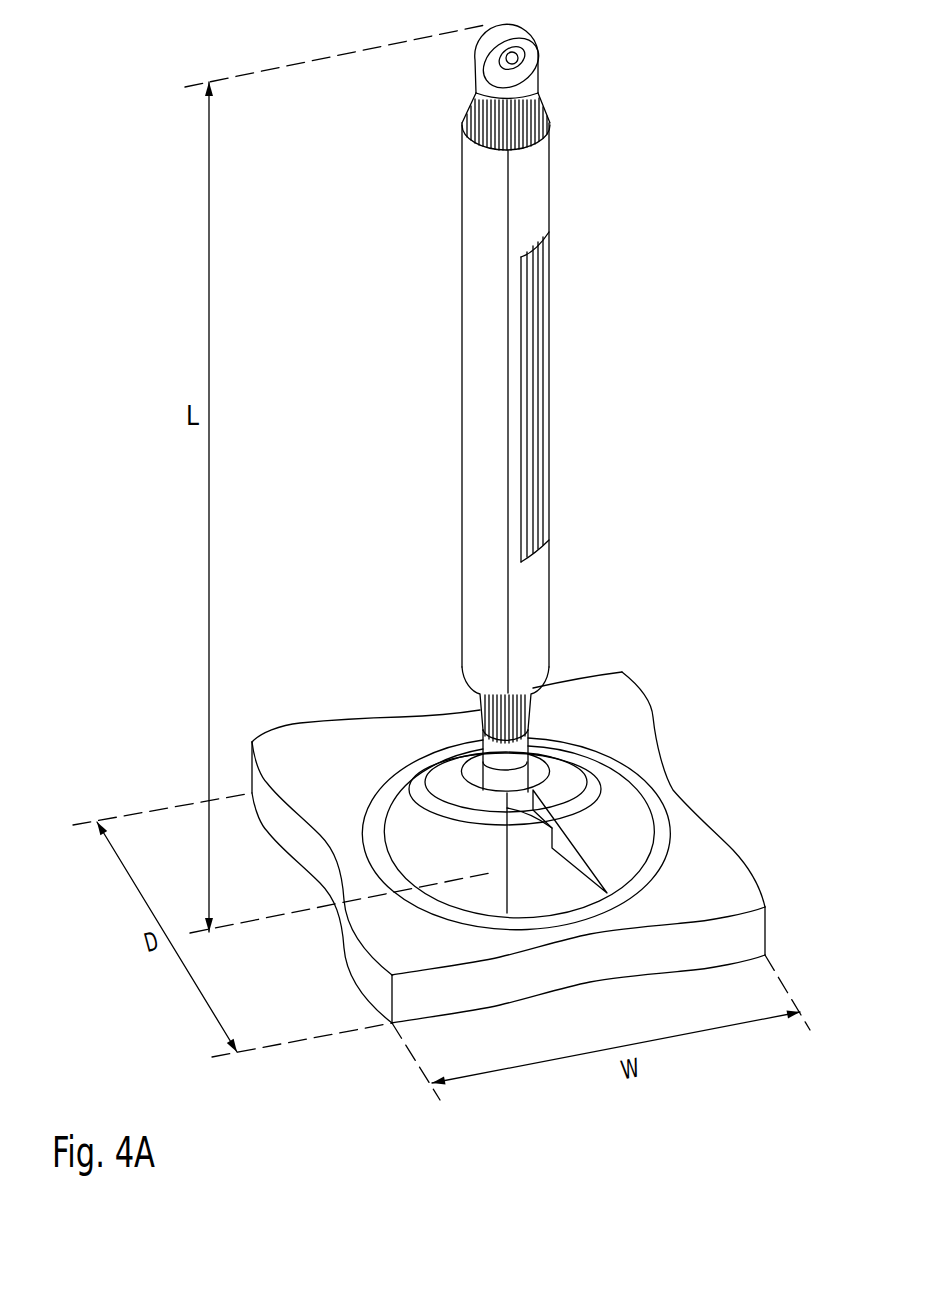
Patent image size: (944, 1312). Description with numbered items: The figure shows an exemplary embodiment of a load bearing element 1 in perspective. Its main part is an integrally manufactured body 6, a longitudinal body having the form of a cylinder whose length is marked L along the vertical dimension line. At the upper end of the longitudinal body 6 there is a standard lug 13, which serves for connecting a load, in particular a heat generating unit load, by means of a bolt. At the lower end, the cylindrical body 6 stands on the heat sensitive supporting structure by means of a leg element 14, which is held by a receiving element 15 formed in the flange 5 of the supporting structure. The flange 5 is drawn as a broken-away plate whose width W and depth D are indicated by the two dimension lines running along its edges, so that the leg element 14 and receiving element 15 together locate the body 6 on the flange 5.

The load bearing element 1 is at (597, 379).
The flange 5 is at (727, 877).
The integrally manufactured body 6 is at (532, 583).
The standard lug 13 is at (522, 53).
The leg element 14 is at (515, 780).
The receiving element 15 is at (607, 830).